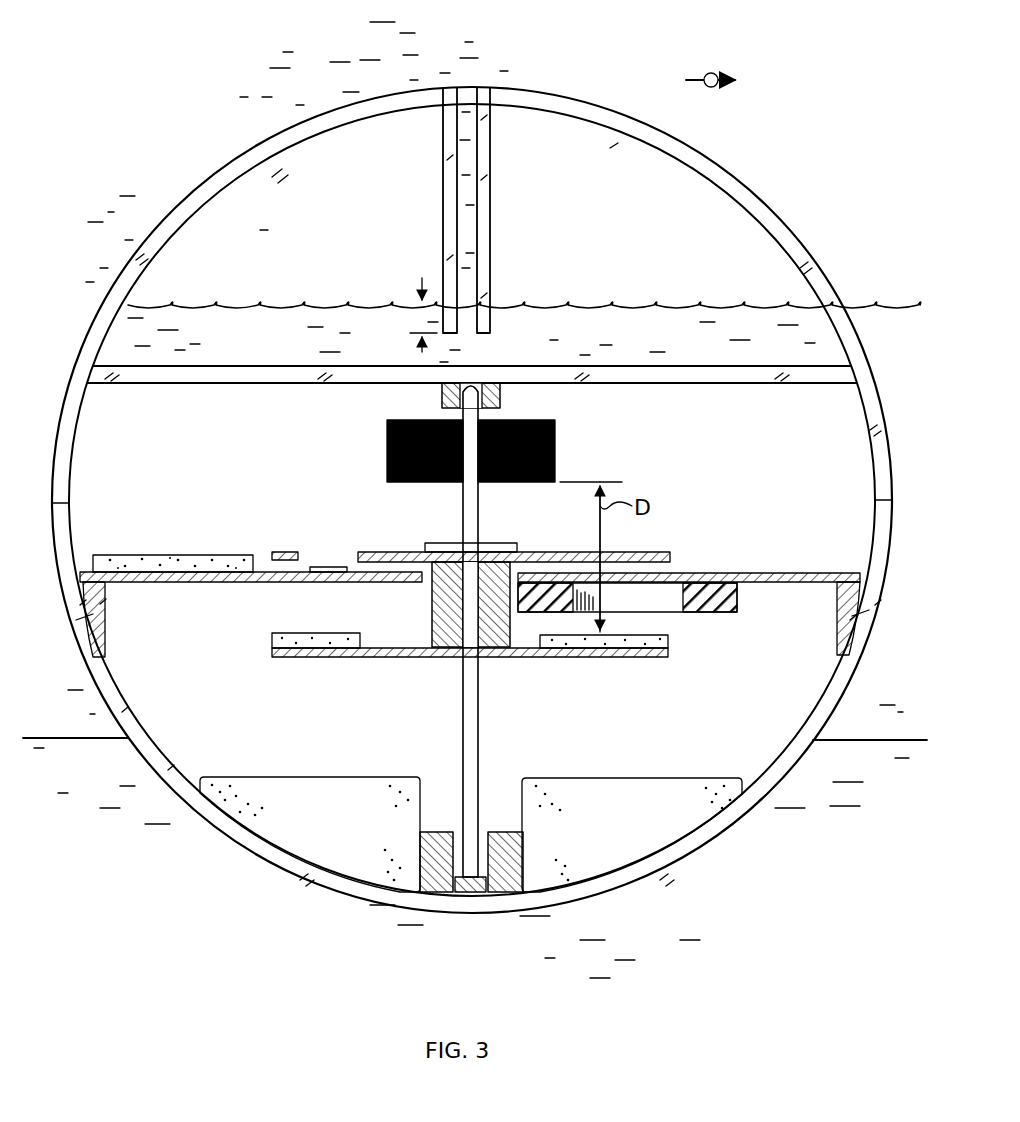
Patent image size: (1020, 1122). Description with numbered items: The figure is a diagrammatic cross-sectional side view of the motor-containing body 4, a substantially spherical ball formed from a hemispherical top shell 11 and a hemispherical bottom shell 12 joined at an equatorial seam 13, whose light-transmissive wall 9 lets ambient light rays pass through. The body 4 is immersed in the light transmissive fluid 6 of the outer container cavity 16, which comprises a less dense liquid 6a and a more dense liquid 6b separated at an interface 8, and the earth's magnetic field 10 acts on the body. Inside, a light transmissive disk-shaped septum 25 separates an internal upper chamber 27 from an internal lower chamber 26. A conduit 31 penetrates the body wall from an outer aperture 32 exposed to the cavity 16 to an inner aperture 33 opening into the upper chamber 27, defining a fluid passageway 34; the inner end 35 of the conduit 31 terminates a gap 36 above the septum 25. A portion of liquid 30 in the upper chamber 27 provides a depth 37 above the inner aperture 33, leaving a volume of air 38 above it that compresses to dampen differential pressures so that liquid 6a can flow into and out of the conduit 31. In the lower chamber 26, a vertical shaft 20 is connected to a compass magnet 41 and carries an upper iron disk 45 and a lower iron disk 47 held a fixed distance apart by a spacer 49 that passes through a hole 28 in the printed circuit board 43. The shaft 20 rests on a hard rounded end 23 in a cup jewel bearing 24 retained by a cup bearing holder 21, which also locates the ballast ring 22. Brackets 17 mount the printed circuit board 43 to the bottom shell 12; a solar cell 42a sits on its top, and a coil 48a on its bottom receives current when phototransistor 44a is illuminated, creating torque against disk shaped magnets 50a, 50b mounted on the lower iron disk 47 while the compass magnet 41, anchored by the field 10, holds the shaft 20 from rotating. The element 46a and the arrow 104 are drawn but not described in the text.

The body 4 is at (204, 110).
The light transmissive fluid 6 is at (471, 192).
The less dense liquid 6a is at (473, 708).
The more dense liquid 6b is at (471, 863).
The interface 8 is at (484, 404).
The light-transmissive wall 9 is at (817, 280).
The magnetic field 10 is at (709, 74).
The top shell 11 is at (58, 438).
The bottom shell 12 is at (52, 528).
The equatorial seam 13 is at (58, 503).
The outer container cavity 16 is at (222, 167).
The brackets 17 is at (92, 624).
The vertical shaft 20 is at (462, 512).
The cup bearing holder 21 is at (518, 854).
The ballast ring 22 is at (342, 776).
The hard rounded end 23 is at (460, 892).
The cup jewel bearing 24 is at (484, 892).
The septum 25 is at (78, 380).
The lower chamber 26 is at (796, 430).
The upper chamber 27 is at (630, 210).
The hole 28 is at (524, 568).
The portion of liquid 30 is at (524, 322).
The conduit 31 is at (490, 158).
The outer aperture 32 is at (468, 88).
The inner aperture 33 is at (466, 334).
The fluid passageway 34 is at (468, 212).
The inner end 35 is at (486, 336).
The gap 36 is at (472, 352).
The depth 37 is at (422, 278).
The air 38 is at (266, 248).
The compass magnet 41 is at (556, 432).
The solar cell 42a is at (166, 576).
The printed circuit board 43 is at (126, 585).
The phototransistor 44a is at (320, 582).
The upper iron disk 45 is at (654, 550).
The sensor 46a is at (316, 558).
The lower iron disk 47 is at (668, 654).
The coil 48a is at (736, 596).
The spacer 49 is at (432, 606).
The disk shaped magnet 50a is at (670, 640).
The disk shaped magnet 50b is at (270, 640).
The generator assembly 104 is at (610, 660).